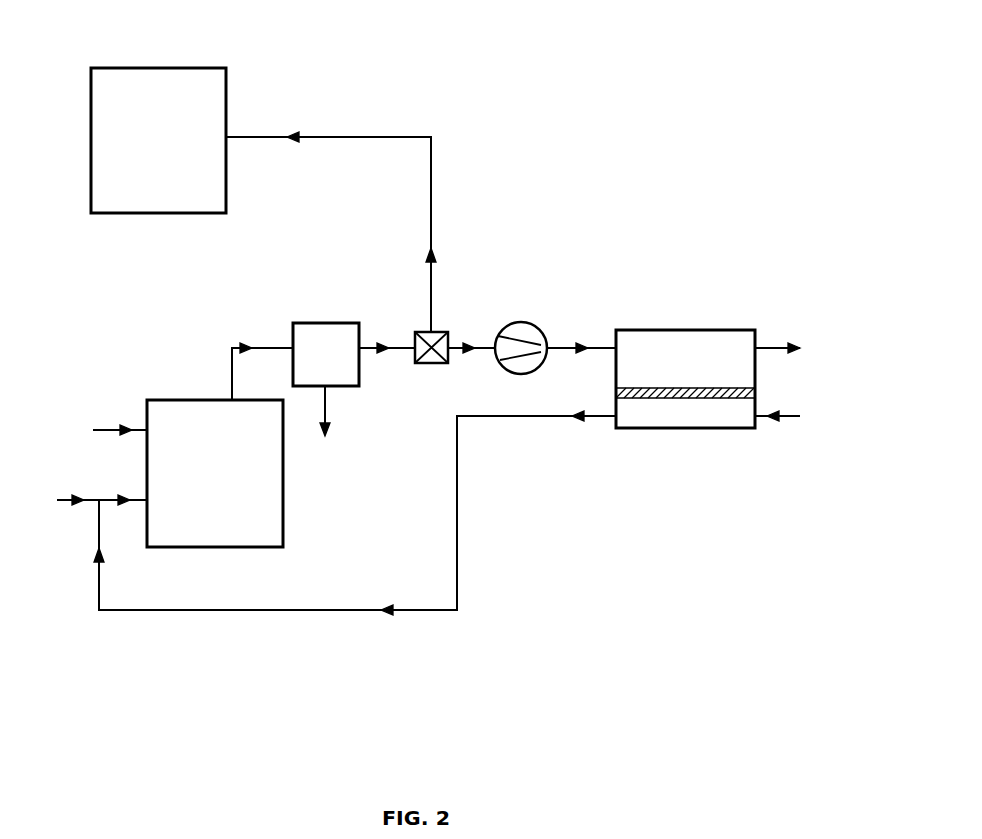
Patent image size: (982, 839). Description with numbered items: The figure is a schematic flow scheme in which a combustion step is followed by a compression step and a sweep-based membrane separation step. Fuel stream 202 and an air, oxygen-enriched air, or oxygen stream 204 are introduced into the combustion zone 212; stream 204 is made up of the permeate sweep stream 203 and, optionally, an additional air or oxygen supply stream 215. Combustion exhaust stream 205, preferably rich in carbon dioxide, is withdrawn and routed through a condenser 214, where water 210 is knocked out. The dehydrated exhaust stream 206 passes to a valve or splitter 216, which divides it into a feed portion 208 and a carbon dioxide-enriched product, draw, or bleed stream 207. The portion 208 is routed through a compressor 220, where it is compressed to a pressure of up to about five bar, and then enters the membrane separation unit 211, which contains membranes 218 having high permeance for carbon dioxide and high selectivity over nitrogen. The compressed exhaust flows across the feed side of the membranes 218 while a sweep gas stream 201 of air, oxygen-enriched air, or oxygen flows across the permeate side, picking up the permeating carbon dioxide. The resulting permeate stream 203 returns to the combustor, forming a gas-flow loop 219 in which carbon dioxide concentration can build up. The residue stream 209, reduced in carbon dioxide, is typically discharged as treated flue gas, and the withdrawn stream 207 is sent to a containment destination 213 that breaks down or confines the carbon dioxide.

The sweep gas stream 201 is at (796, 416).
The fuel stream 202 is at (99, 431).
The permeate stream 203 is at (355, 525).
The oxygen-containing feed stream 204 is at (122, 489).
The combustion exhaust stream 205 is at (262, 361).
The dehydrated exhaust stream 206 is at (427, 361).
The carbon dioxide-enriched product stream 207 is at (331, 224).
The feed stream 208 is at (581, 361).
The residue stream 209 is at (796, 349).
The water 210 is at (327, 426).
The membrane separation unit 211 is at (727, 329).
The combustion zone 212 is at (178, 399).
The containment destination 213 is at (187, 67).
The condenser 214 is at (330, 322).
The additional air or oxygen supply stream 215 is at (68, 491).
The valve or splitter 216 is at (438, 331).
The membranes 218 is at (756, 390).
The gas-flow loop 219 is at (490, 592).
The compressor 220 is at (533, 325).